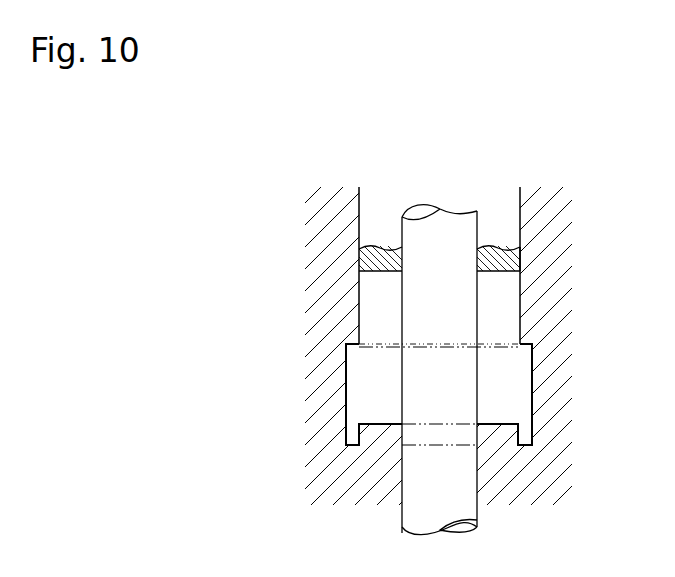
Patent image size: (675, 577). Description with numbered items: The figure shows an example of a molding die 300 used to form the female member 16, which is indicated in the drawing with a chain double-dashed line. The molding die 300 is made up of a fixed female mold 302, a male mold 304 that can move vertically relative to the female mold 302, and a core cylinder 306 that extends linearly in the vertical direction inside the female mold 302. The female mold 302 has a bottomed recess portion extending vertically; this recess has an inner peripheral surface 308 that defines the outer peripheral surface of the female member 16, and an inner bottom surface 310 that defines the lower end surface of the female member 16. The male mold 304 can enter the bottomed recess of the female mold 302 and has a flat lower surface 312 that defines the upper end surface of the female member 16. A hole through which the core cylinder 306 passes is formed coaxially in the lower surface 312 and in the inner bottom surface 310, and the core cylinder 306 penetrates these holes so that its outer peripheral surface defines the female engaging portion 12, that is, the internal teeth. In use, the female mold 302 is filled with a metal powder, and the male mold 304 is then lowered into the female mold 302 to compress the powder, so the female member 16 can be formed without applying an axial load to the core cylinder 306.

The molding die 300 is at (459, 152).
The female mold 302 is at (334, 176).
The male mold 304 is at (494, 247).
The core cylinder 306 is at (466, 311).
The inner peripheral surface 308 is at (360, 224).
The inner bottom surface 310 is at (502, 423).
The lower surface 312 is at (504, 272).
The female member 16 is at (388, 345).
The female engaging portion 12 is at (403, 390).